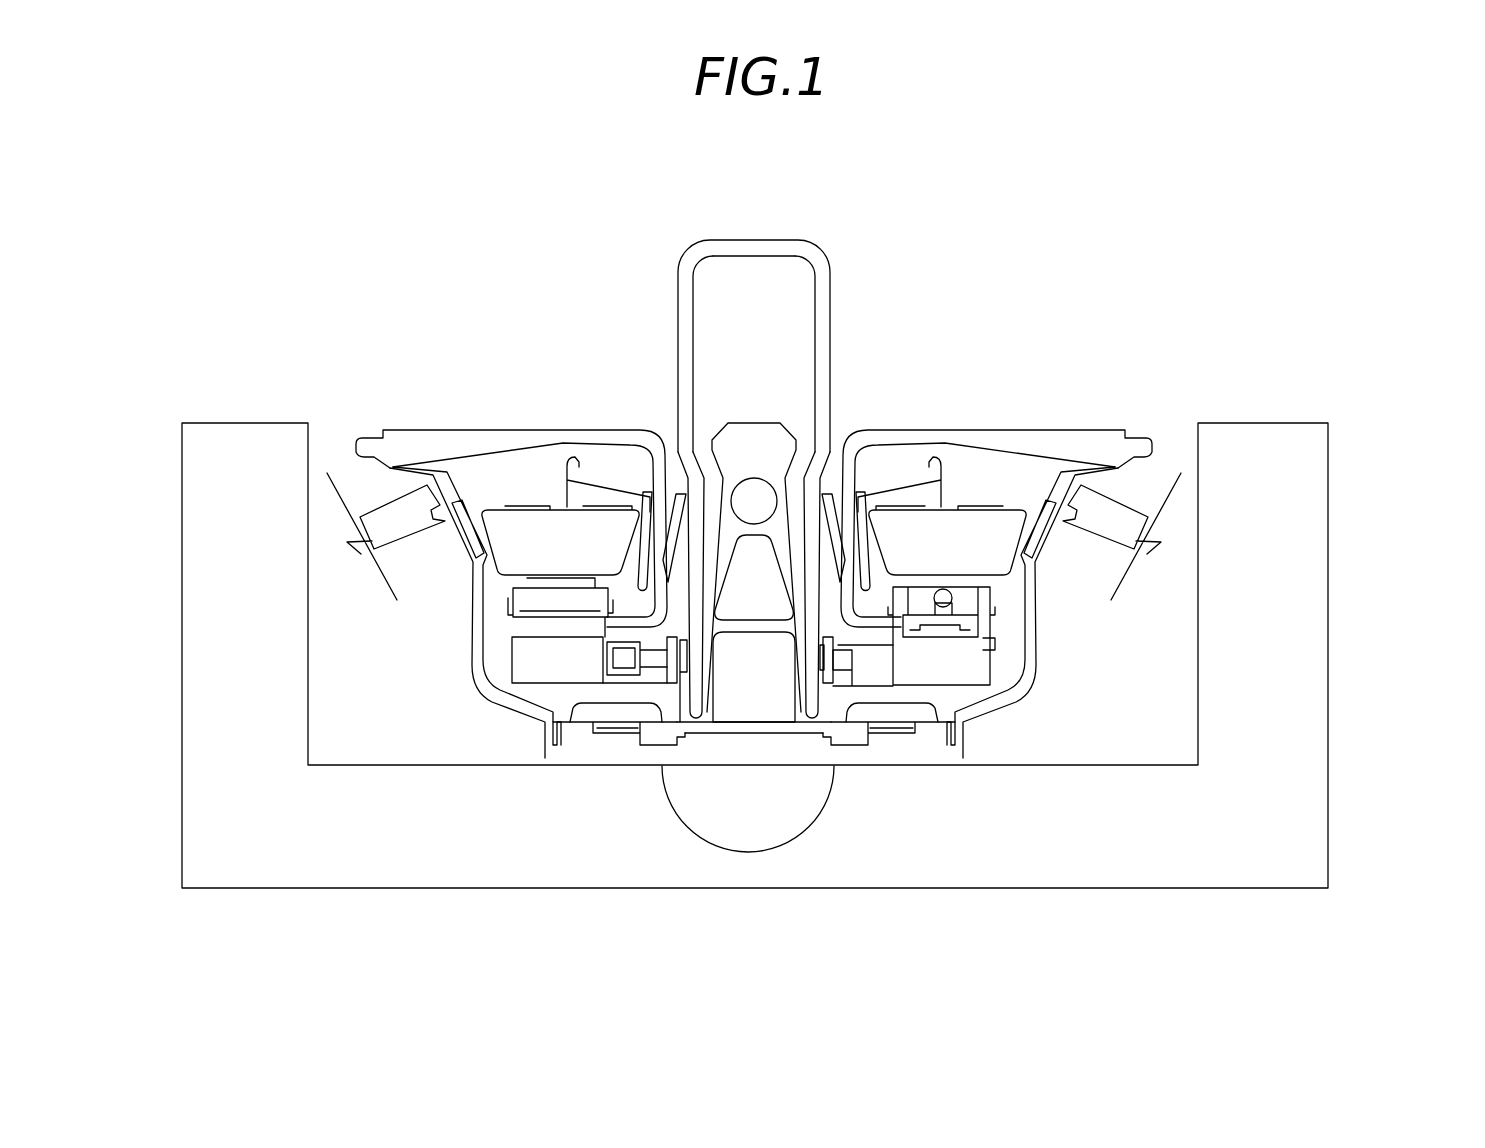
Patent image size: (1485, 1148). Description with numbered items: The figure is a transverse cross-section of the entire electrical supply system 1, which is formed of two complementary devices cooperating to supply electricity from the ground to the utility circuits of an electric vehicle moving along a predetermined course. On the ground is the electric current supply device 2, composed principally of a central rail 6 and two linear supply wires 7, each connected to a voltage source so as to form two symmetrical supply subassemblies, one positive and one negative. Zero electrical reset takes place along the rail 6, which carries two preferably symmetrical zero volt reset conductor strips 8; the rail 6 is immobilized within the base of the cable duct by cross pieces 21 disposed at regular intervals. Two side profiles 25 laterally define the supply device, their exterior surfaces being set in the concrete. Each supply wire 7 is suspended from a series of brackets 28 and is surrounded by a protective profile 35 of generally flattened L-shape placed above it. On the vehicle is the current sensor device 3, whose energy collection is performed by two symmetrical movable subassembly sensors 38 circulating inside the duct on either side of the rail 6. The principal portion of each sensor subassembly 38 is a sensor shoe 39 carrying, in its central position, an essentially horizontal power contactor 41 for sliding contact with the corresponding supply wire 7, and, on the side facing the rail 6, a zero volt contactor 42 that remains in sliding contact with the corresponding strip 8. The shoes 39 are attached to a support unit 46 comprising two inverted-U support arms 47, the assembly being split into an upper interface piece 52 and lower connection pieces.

The electrical supply system 1 is at (1358, 218).
The electric current supply device 2 is at (1360, 677).
The current sensor device 3 is at (870, 210).
The rail 6 is at (763, 450).
The linear supply wire 7 is at (513, 563).
The zero volt reset conductor strip 8 is at (700, 672).
The cross piece 21 is at (933, 750).
The side profile 25 is at (485, 519).
The bracket 28 is at (530, 491).
The protective profile 35 is at (463, 440).
The movable subassembly sensor 38 is at (500, 657).
The sensor shoe 39 is at (537, 667).
The power contactor 41 is at (547, 580).
The zero volt contactor 42 is at (682, 662).
The support unit 46 is at (750, 234).
The support arm 47 is at (823, 327).
The upper interface piece 52 is at (665, 290).